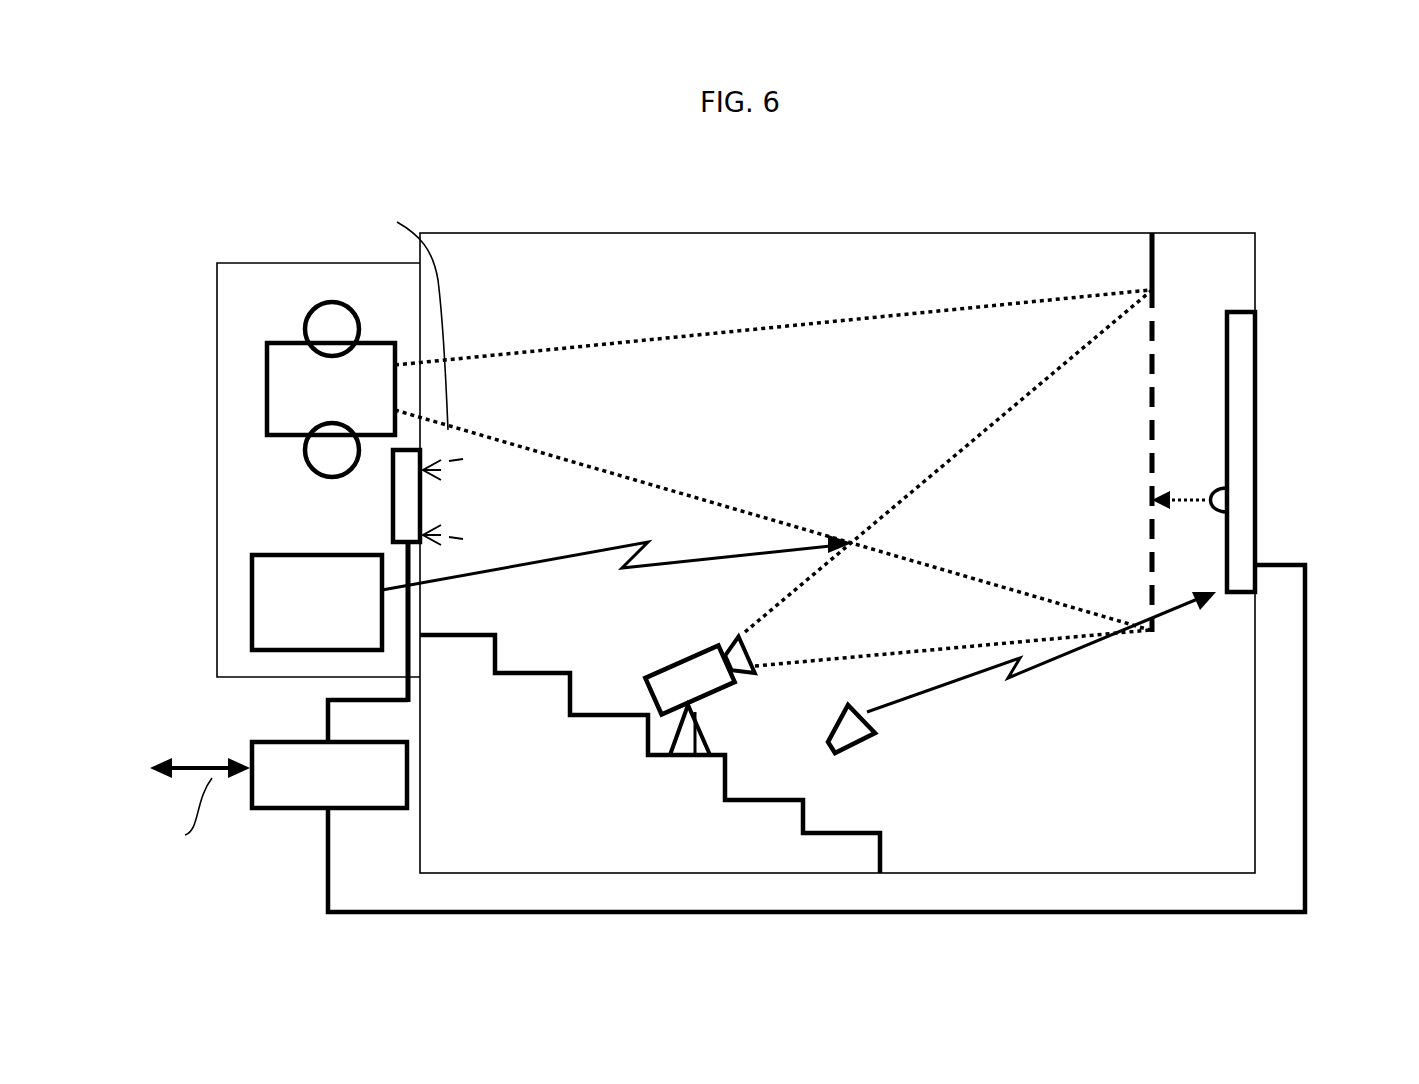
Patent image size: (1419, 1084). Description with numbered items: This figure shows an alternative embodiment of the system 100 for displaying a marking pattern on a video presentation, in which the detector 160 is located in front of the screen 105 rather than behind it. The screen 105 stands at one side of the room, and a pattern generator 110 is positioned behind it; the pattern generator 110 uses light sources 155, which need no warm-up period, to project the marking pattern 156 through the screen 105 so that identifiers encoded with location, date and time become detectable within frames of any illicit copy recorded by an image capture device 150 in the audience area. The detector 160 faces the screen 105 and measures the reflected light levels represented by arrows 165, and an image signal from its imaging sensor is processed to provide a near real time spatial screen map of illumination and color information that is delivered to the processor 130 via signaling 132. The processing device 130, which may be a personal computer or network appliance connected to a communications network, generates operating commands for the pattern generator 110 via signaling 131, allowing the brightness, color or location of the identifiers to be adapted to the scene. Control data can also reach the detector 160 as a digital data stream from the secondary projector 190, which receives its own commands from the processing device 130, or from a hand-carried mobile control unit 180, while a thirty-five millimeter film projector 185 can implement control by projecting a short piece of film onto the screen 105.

The system 100 is at (1372, 116).
The screen 105 is at (1163, 298).
The pattern generator 110 is at (1267, 340).
The processing device 130 is at (302, 822).
The signaling 131 is at (1315, 710).
The signaling 132 is at (315, 717).
The image capture device 150 is at (672, 648).
The light sources 155 is at (1218, 500).
The marking pattern 156 is at (1177, 485).
The detector 160 is at (382, 486).
The screen exit rays / reflected light arrows 165 is at (398, 307).
The mobile control unit 180 is at (865, 752).
The 35 mm film projector 185 is at (245, 400).
The secondary projector 190 is at (240, 648).